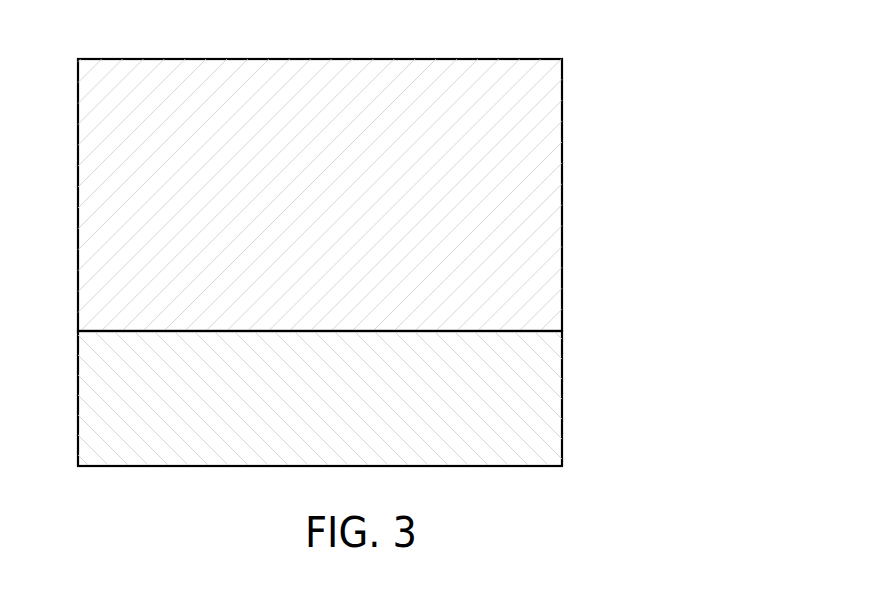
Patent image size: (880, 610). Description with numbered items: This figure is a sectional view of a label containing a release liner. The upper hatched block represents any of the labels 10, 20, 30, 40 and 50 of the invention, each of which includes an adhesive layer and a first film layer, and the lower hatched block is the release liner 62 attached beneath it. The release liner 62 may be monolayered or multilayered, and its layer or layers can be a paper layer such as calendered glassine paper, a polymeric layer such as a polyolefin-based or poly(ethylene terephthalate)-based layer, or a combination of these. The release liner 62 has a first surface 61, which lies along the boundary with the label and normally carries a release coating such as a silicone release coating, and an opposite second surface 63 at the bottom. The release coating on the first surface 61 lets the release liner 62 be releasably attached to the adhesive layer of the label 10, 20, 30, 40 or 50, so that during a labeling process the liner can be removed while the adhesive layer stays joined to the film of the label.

The label 10 is at (443, 195).
The label 20 is at (443, 195).
The label 30 is at (443, 195).
The label 40 is at (443, 195).
The label 50 is at (563, 137).
The first surface 61 is at (138, 332).
The release liner 62 is at (563, 398).
The second surface 63 is at (103, 465).